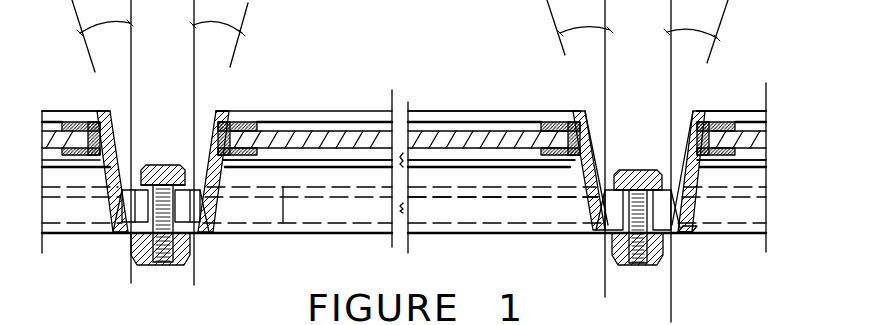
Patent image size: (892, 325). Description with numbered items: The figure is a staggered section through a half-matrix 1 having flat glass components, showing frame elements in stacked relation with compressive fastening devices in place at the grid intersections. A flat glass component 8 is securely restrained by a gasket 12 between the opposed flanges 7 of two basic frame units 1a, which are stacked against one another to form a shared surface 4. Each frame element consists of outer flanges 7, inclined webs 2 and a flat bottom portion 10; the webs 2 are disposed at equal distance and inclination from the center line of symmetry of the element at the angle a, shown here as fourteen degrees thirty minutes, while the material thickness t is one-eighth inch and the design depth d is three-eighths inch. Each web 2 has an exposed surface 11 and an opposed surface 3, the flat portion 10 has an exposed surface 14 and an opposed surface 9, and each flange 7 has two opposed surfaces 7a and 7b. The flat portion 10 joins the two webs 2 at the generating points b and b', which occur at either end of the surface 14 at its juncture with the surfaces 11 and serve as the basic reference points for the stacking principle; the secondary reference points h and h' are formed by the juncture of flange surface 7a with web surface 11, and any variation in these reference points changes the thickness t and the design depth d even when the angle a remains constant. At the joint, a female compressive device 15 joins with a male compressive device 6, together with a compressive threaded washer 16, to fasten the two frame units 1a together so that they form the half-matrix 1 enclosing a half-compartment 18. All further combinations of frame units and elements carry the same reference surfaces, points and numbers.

The half-matrix 1 is at (323, 42).
The basic frame unit 1a is at (245, 69).
The web 2 is at (575, 132).
The opposed surface of web 3 is at (568, 113).
The shared surface 4 is at (577, 177).
The male compressive device 6 is at (622, 263).
The flange 7 is at (545, 117).
The flange surface 7a is at (415, 111).
The flange surface 7b is at (438, 122).
The flat glass component 8 is at (485, 140).
The opposed surface of flat portion 9 is at (415, 227).
The flat bottom portion 10 is at (594, 208).
The exposed surface of web 11 is at (593, 147).
The gasket 12 is at (548, 120).
The exposed surface of flat portion 14 is at (643, 270).
The female compressive device 15 is at (623, 167).
The compressive threaded washer 16 is at (675, 237).
The half-compartment 18 is at (521, 212).
The angle of inclination a is at (400, 36).
The generating point b is at (361, 196).
The generating point b' is at (442, 197).
The design depth d is at (343, 143).
The secondary reference point h is at (93, 94).
The secondary reference point h' is at (232, 94).
The thickness t is at (213, 127).